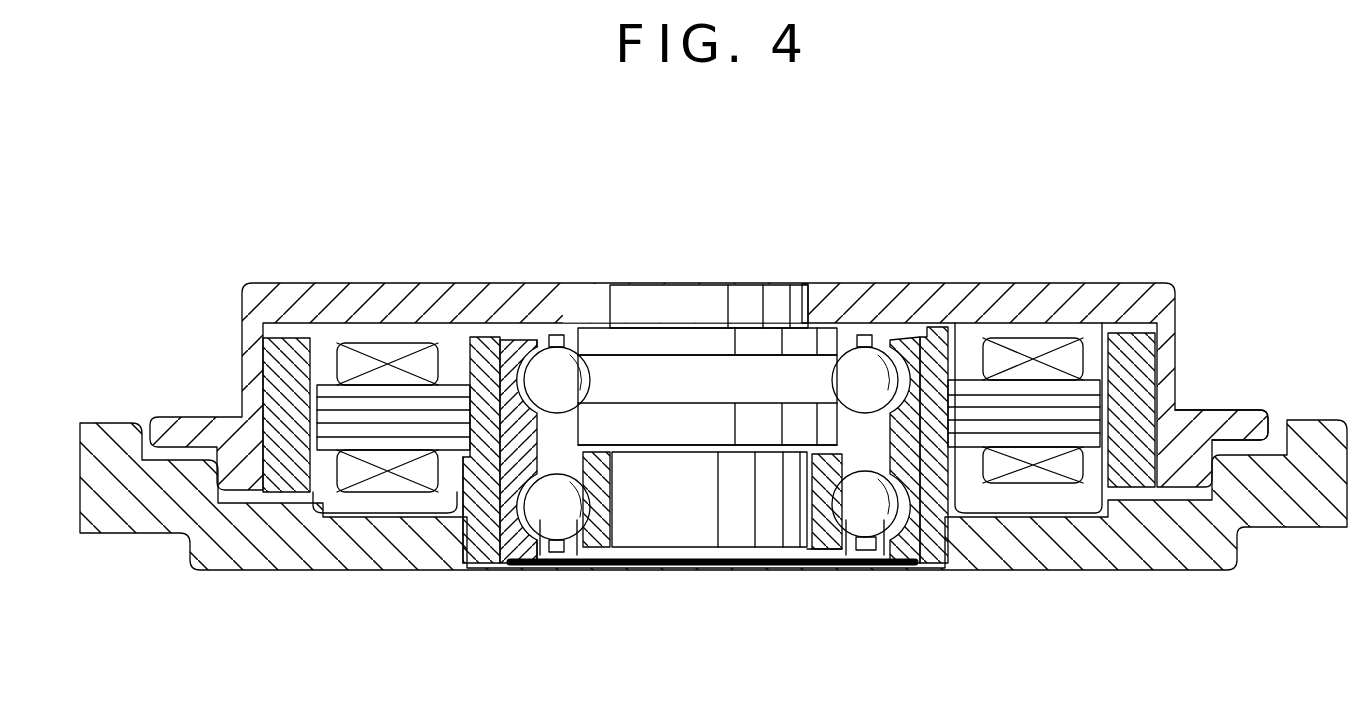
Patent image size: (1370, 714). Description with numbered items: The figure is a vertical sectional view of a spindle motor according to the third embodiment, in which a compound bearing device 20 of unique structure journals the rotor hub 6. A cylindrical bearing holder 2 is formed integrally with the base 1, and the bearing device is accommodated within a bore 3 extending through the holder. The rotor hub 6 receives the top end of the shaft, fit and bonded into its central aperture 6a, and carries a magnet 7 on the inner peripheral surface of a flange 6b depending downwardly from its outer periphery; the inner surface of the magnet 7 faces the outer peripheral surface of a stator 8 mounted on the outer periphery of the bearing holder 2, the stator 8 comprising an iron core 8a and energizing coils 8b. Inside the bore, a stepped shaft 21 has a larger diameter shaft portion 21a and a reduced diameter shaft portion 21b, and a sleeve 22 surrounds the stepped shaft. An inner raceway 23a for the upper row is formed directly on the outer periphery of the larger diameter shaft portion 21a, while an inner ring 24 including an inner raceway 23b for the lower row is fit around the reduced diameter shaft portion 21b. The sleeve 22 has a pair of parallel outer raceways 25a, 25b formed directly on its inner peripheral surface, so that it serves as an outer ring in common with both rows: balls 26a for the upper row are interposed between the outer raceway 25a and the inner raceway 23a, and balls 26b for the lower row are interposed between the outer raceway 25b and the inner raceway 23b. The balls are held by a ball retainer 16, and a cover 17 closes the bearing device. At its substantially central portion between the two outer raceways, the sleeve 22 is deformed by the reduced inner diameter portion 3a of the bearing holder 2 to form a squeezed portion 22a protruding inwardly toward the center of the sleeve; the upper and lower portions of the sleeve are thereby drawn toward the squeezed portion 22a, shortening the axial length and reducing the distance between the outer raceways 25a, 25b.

The base 1 is at (1192, 572).
The bearing holder 2 is at (958, 322).
The bore 3 is at (912, 340).
The reduced inner diameter portion 3a is at (502, 447).
The rotor hub 6 is at (1075, 283).
The central aperture 6a is at (800, 283).
The flange 6b is at (1168, 345).
The magnet 7 is at (1137, 393).
The stator 8 is at (1060, 486).
The iron core 8a is at (1092, 440).
The energizing coils 8b is at (1055, 480).
The ball retainer 16 is at (865, 335).
The cover 17 is at (803, 560).
The compound bearing device 20 is at (902, 570).
The stepped shaft 21 is at (752, 550).
The larger diameter shaft portion 21a is at (668, 345).
The reduced diameter shaft portion 21b is at (697, 548).
The sleeve 22 is at (513, 345).
The squeezed portion 22a is at (468, 530).
The inner raceway for the upper row 23a is at (687, 373).
The inner raceway for the lower row 23b is at (580, 548).
The inner ring 24 is at (600, 548).
The outer raceway of the upper row 25a is at (537, 337).
The outer raceway of the lower row 25b is at (538, 565).
The balls for the upper row 26a is at (553, 335).
The balls for the lower row 26b is at (553, 565).